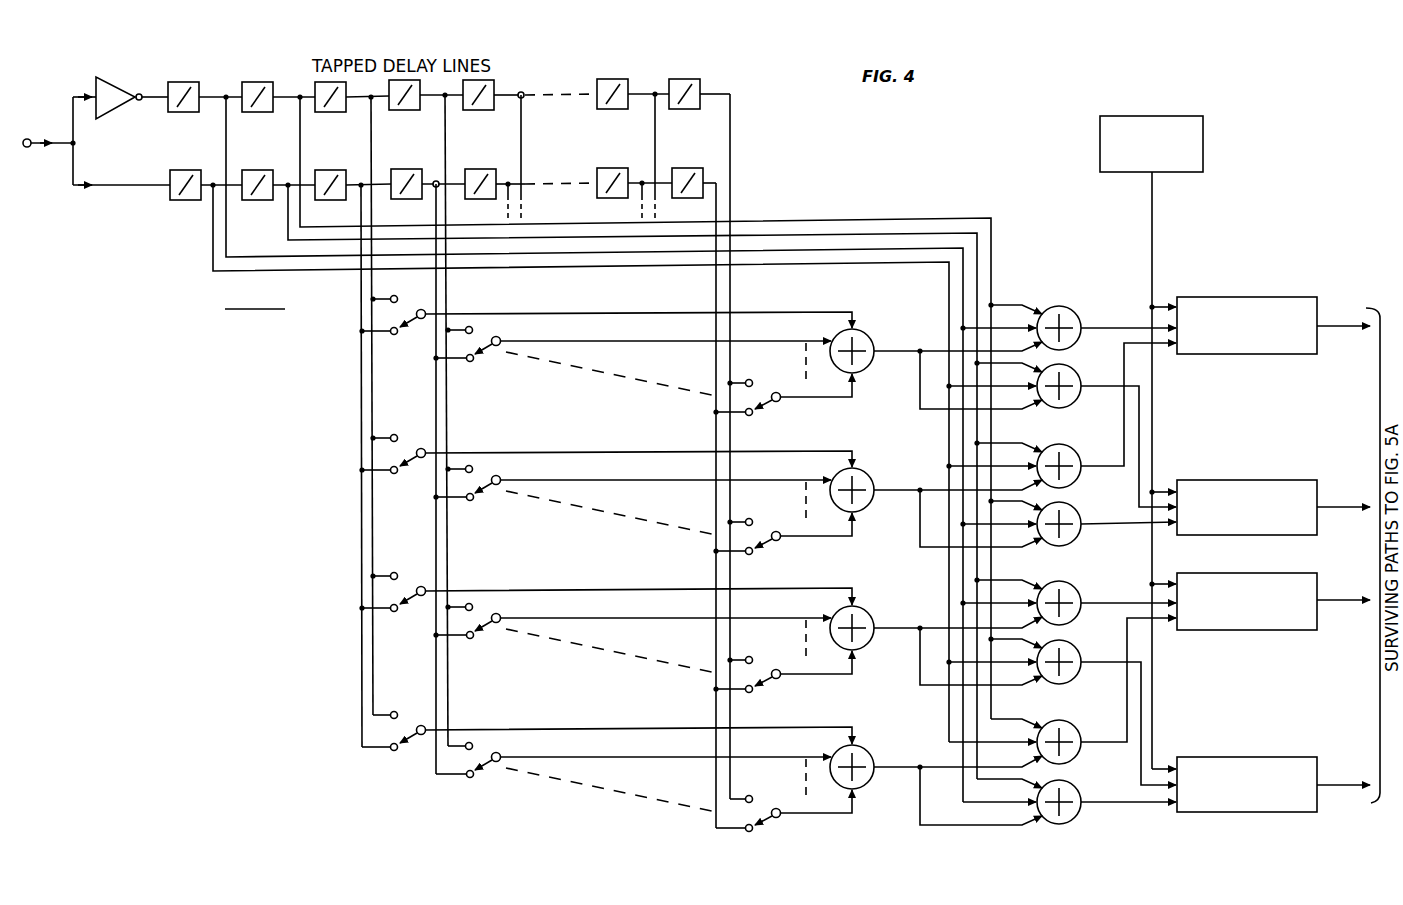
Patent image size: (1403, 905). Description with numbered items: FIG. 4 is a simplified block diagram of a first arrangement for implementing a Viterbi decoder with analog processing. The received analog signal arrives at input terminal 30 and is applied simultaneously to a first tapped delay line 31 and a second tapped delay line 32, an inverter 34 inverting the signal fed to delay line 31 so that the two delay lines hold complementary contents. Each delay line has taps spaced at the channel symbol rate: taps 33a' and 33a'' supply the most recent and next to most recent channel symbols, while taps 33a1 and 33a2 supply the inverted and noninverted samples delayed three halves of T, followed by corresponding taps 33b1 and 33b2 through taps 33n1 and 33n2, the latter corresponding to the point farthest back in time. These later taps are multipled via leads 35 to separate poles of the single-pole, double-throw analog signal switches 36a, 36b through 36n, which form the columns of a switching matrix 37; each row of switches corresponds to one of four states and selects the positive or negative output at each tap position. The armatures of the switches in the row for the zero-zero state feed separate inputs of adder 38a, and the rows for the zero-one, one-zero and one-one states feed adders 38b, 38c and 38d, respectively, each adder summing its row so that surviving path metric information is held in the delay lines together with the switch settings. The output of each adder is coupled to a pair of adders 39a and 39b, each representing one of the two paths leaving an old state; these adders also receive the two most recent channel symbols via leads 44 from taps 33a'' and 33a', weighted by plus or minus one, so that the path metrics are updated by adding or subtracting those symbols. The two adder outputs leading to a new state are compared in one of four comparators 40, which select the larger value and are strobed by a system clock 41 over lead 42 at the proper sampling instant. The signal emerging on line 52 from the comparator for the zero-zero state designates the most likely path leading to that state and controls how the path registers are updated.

The input terminal 30 is at (32, 136).
The first tapped delay line 31 is at (157, 94).
The second tapped delay line 32 is at (125, 189).
The tap 33a' is at (196, 142).
The tap 33a'' is at (271, 142).
The tap 33a1 is at (366, 104).
The tap 33a2 is at (361, 179).
The tap 33b1 is at (443, 103).
The tap 33b2 is at (435, 179).
The tap 33n1 is at (726, 100).
The tap 33n2 is at (715, 179).
The inverter 34 is at (121, 90).
The leads 35 is at (359, 283).
The analog signal switch 36a is at (411, 326).
The analog signal switch 36b is at (489, 353).
The analog signal switch 36n is at (766, 387).
The switching matrix 37 is at (538, 578).
The adder 38a is at (867, 368).
The adder 38b is at (867, 507).
The adder 38c is at (867, 645).
The adder 38d is at (867, 784).
The adder 39a is at (1059, 305).
The adder 39b is at (1075, 402).
The comparator 40 is at (1244, 297).
The system clock 41 is at (1165, 117).
The lead 42 is at (1150, 210).
The leads 44 is at (922, 262).
The output line 52 is at (1338, 328).